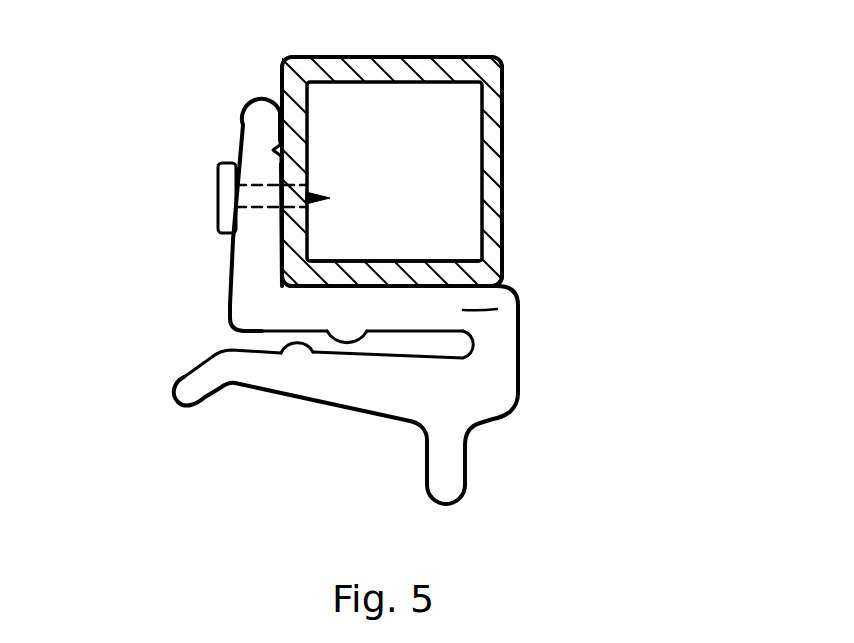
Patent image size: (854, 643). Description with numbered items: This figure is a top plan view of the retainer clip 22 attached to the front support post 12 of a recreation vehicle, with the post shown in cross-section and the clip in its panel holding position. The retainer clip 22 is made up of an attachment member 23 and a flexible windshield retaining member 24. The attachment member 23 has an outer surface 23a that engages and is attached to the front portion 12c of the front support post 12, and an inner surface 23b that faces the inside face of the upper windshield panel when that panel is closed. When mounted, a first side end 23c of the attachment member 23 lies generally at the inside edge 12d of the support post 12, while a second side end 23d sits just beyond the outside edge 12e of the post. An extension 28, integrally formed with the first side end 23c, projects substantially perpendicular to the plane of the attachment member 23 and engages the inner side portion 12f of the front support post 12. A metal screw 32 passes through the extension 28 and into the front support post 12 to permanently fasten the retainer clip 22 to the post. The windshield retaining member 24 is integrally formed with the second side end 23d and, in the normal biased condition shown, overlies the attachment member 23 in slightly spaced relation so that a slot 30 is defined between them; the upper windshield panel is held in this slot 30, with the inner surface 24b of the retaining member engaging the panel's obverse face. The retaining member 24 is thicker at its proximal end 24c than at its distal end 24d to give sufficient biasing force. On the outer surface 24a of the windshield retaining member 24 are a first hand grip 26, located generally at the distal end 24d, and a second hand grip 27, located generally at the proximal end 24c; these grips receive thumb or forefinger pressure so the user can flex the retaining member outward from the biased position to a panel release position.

The front support post 12 is at (493, 103).
The front portion of the front support post 12c is at (373, 270).
The inside edge of the support post 12d is at (327, 199).
The outside edge of the support post 12e is at (503, 284).
The inner side portion of the front support post 12f is at (284, 132).
The retainer clip 22 is at (523, 343).
The attachment member 23 is at (519, 293).
The outer surface of the attachment member 23a is at (410, 268).
The inner surface of the attachment member 23b is at (330, 326).
The first side end of the attachment member 23c is at (247, 313).
The second side end of the attachment member 23d is at (523, 317).
The windshield retaining member 24 is at (400, 398).
The outer surface of the windshield retaining member 24a is at (338, 413).
The inner surface of the windshield retaining member 24b is at (281, 355).
The proximal end of the windshield retaining member 24c is at (495, 387).
The distal end of the windshield retaining member 24d is at (210, 371).
The first hand grip 26 is at (180, 403).
The second hand grip 27 is at (448, 482).
The extension 28 is at (238, 136).
The slot 30 is at (197, 335).
The metal screw 32 is at (218, 196).